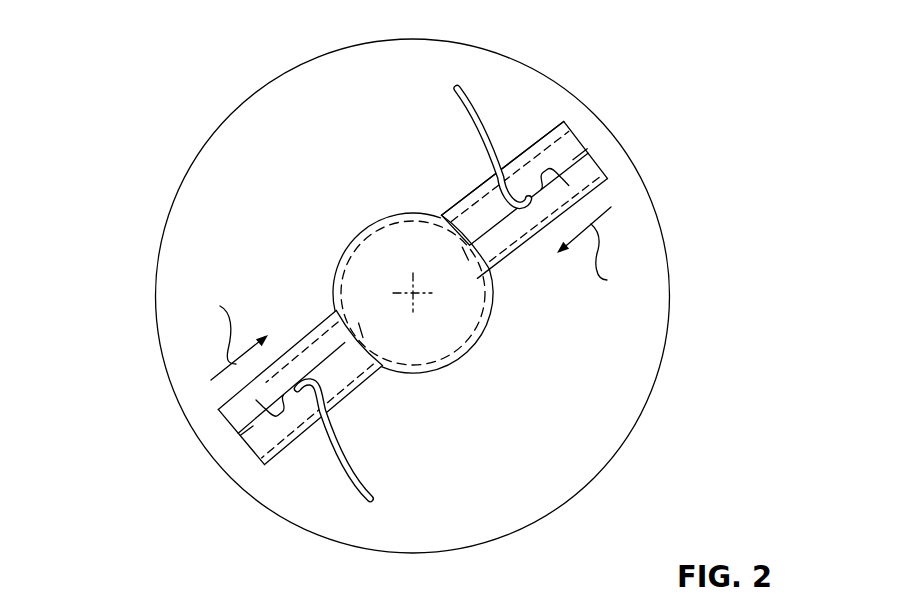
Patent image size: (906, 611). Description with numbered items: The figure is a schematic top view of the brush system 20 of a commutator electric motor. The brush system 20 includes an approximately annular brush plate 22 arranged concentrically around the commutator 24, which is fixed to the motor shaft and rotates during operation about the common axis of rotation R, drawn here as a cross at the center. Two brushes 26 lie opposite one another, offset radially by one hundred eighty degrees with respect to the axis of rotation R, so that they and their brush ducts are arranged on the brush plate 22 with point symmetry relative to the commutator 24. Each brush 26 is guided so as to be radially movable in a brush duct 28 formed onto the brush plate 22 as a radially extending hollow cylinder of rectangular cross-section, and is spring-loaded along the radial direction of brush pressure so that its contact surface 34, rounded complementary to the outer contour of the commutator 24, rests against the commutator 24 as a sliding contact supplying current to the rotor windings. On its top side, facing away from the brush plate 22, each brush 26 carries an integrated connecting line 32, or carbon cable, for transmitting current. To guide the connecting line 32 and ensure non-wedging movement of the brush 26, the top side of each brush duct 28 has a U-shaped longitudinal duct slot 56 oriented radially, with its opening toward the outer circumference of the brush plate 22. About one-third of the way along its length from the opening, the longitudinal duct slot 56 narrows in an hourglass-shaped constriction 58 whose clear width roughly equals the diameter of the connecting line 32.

The brush system 20 is at (126, 141).
The brush plate 22 is at (652, 338).
The commutator 24 is at (473, 347).
The brush 26 is at (491, 227).
The brush duct 28 is at (557, 128).
The connecting line 32 is at (470, 105).
The contact surface 34 is at (460, 246).
The longitudinal duct slot 56 is at (571, 159).
The constriction 58 is at (555, 177).
The axis of rotation R is at (409, 289).